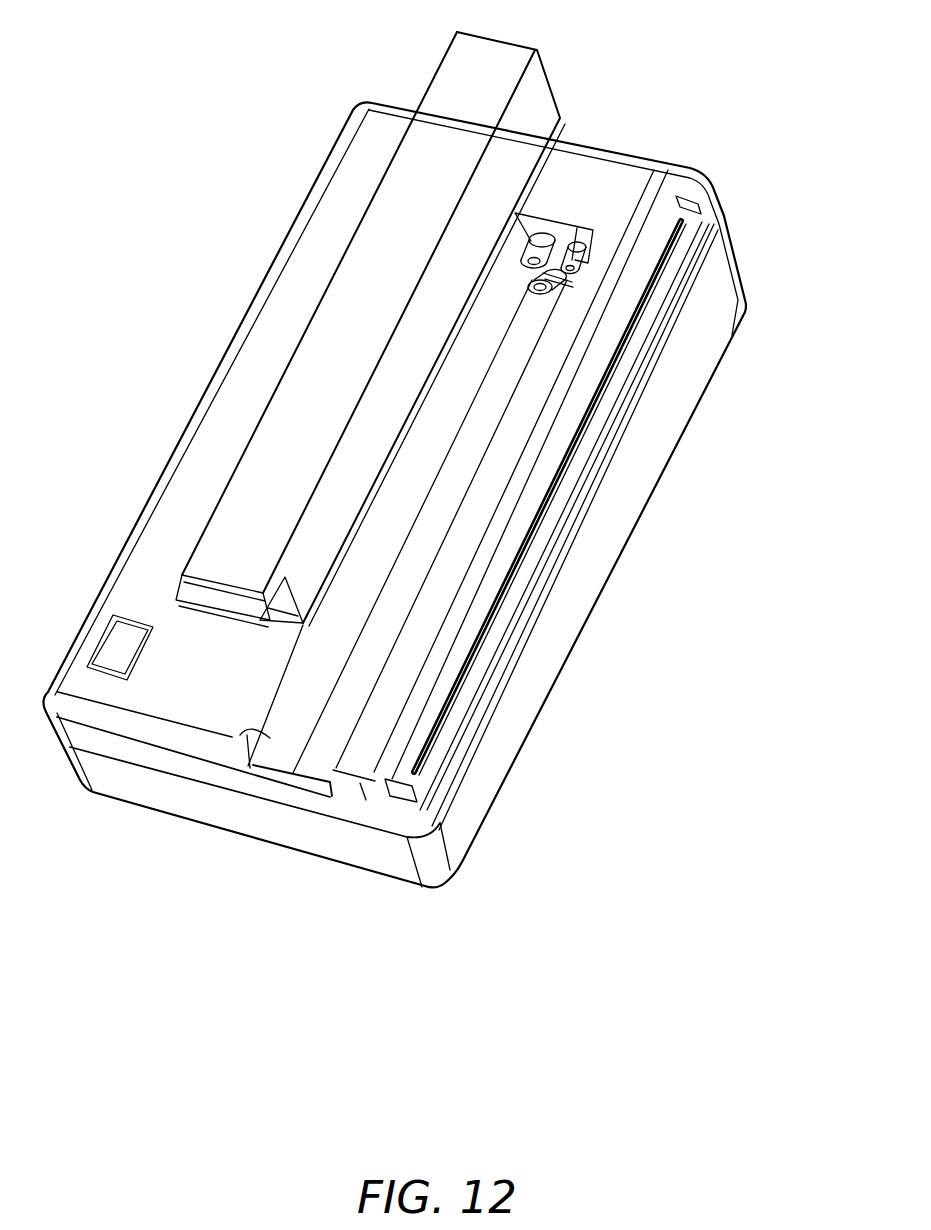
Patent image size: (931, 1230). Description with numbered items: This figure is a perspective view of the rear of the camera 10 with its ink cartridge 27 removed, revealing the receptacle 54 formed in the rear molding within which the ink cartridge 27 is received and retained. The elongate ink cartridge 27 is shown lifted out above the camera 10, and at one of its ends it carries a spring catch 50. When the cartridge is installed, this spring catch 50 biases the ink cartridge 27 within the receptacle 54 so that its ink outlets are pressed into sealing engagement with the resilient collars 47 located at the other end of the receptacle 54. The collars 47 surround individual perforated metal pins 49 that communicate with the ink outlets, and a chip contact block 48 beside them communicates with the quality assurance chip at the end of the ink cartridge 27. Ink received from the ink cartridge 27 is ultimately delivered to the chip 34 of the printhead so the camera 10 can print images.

The camera 10 is at (189, 212).
The ink cartridge 27 is at (462, 73).
The chip 34 is at (418, 772).
The resilient collars 47 is at (540, 243).
The chip contact block 48 is at (552, 288).
The perforated metal pins 49 is at (588, 247).
The spring catch 50 is at (300, 625).
The receptacle 54 is at (235, 737).